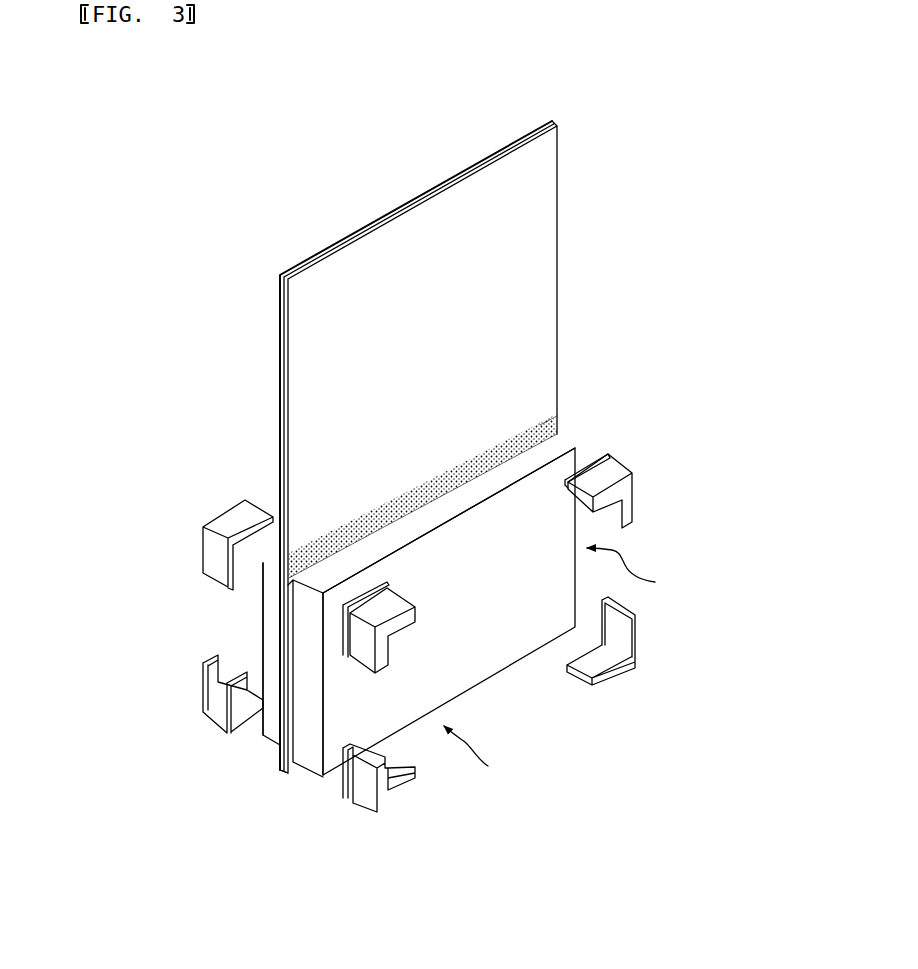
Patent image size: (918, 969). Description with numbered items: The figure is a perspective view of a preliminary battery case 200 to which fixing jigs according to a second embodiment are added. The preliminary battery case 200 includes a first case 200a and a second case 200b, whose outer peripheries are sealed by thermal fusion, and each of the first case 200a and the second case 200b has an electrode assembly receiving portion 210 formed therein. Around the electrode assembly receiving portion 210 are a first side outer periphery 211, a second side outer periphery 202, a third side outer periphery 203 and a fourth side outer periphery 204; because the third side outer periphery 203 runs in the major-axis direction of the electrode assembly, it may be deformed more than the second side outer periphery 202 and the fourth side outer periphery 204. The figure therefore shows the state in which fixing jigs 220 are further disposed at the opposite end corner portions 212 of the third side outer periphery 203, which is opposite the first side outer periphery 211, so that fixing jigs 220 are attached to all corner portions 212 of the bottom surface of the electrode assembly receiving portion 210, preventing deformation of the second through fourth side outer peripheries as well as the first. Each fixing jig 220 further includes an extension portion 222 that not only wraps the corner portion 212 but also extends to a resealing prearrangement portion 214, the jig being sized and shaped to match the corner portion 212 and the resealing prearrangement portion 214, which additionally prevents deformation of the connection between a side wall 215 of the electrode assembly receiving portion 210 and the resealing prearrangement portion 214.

The preliminary battery case 200 is at (507, 420).
The first case 200a is at (500, 153).
The second case 200b is at (469, 448).
The second side outer periphery 202 is at (284, 740).
The third side outer periphery 203 is at (483, 758).
The fourth side outer periphery 204 is at (641, 570).
The electrode assembly receiving portion 210 is at (485, 662).
The first side outer periphery 211 is at (535, 455).
The corner portion 212 is at (323, 593).
The resealing prearrangement portion 214 is at (520, 454).
The side wall 215 is at (487, 488).
The fixing jig 220 is at (429, 664).
The extension portion 222 is at (609, 456).